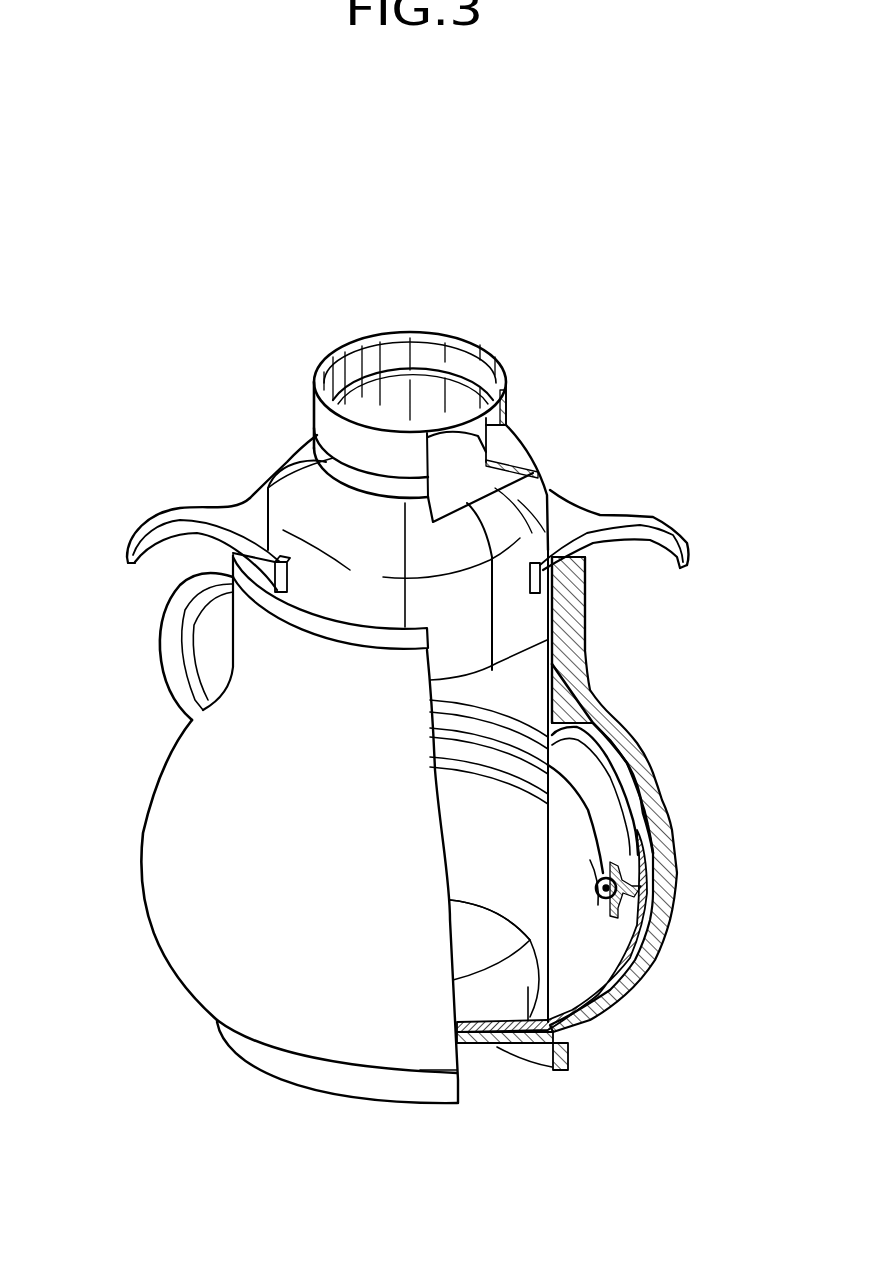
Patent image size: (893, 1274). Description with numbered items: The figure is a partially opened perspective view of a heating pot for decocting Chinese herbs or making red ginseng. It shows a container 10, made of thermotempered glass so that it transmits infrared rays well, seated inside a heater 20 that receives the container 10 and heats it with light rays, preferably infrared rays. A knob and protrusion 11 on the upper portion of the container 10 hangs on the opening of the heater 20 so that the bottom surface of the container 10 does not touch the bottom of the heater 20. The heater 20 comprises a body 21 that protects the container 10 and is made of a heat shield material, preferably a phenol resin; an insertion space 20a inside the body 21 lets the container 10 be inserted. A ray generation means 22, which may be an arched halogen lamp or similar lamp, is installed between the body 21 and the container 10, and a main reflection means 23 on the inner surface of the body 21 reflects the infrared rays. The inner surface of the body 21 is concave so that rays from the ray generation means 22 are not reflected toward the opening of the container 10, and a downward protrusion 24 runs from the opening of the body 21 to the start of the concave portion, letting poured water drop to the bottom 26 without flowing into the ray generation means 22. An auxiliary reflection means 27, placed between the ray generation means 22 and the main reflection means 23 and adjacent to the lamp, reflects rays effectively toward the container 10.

The container 10 is at (548, 452).
The knob and protrusion 11 is at (573, 523).
The heater 20 is at (177, 928).
The insertion space 20a is at (583, 937).
The body 21 is at (657, 805).
The ray generation means 22 is at (598, 858).
The main reflection means 23 is at (640, 930).
The downward protrusion 24 is at (562, 717).
The bottom 26 is at (530, 993).
The auxiliary reflection means 27 is at (593, 792).